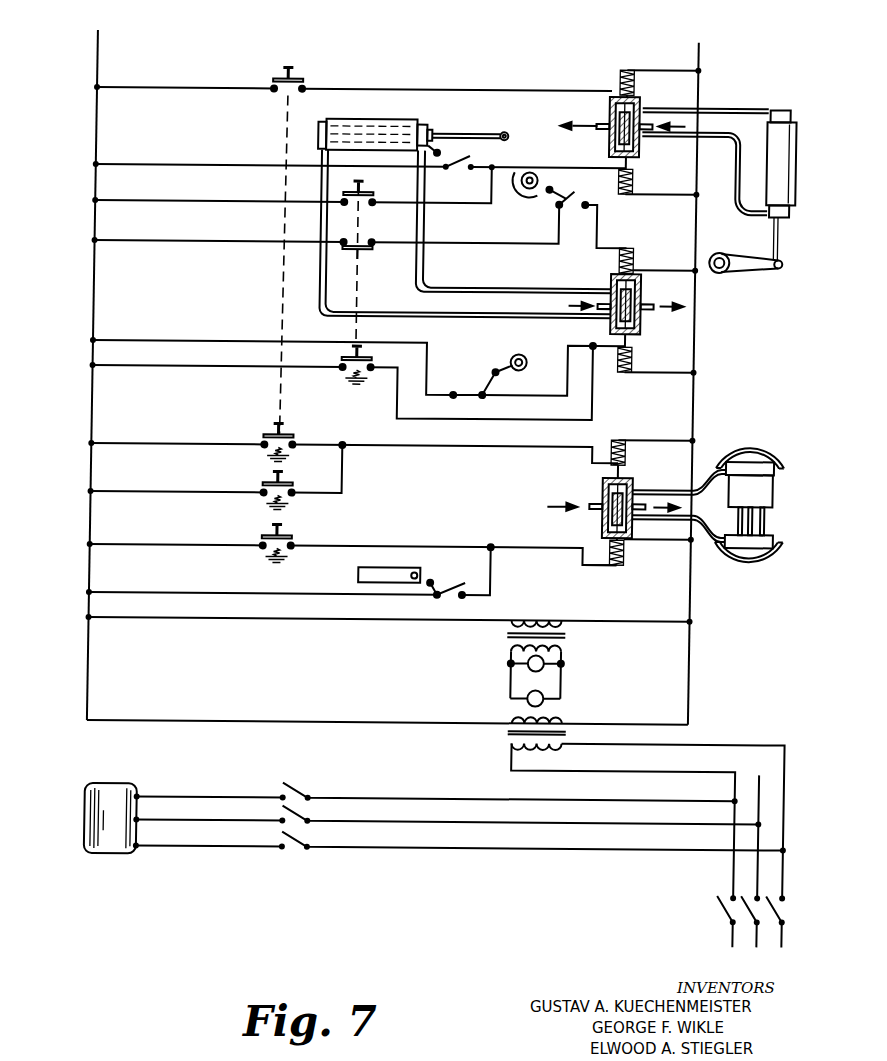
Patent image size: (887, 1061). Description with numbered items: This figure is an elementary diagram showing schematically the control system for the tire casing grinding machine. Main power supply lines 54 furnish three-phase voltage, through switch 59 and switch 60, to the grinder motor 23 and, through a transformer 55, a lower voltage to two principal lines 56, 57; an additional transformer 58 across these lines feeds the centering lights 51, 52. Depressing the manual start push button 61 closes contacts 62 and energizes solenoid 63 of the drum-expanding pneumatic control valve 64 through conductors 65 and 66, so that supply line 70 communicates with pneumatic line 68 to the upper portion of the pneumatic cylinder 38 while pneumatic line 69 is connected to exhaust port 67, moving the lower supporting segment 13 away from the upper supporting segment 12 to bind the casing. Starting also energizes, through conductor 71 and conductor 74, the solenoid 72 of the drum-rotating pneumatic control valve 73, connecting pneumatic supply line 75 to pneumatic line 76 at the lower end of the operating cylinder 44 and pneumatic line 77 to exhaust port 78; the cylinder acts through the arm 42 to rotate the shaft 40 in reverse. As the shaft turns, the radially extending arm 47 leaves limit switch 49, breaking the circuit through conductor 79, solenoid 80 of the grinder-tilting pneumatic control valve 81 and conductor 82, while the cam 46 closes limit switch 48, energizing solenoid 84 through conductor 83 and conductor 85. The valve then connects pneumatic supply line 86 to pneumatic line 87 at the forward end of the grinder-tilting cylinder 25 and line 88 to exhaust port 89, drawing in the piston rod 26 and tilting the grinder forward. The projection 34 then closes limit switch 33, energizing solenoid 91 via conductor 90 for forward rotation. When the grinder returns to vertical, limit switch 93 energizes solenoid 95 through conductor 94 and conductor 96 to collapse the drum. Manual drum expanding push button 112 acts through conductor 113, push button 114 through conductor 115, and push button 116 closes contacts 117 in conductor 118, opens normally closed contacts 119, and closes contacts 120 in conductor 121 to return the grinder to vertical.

The upper supporting segment 12 is at (762, 447).
The lower supporting segment 13 is at (767, 555).
The grinder motor 23 is at (126, 853).
The grinder-tilting cylinder 25 is at (350, 115).
The piston rod 26 is at (483, 127).
The limit switch 33 is at (470, 156).
The projection 34 is at (438, 146).
The pneumatic cylinder 38 is at (770, 490).
The shaft 40 is at (539, 170).
The arm 42 is at (761, 265).
The operating cylinder 44 is at (795, 112).
The cam 46 is at (515, 182).
The radially extending arm 47 is at (498, 366).
The limit switch 48 is at (574, 205).
The limit switch 49 is at (467, 389).
The centering light 51 is at (549, 658).
The centering light 52 is at (553, 697).
The main power supply lines 54 is at (743, 867).
The transformer 55 is at (524, 733).
The principal line 56 is at (95, 668).
The principal line 57 is at (698, 677).
The transformer 58 is at (549, 620).
The switch 59 is at (738, 905).
The switch 60 is at (308, 785).
The manual start push button 61 is at (287, 64).
The contacts 62 is at (298, 433).
The solenoid 63 is at (624, 434).
The drum-expanding pneumatic control valve 64 is at (614, 492).
The conductor 65 is at (492, 445).
The conductor 66 is at (655, 436).
The exhaust port 67 is at (650, 516).
The pneumatic line 68 is at (652, 488).
The pneumatic line 69 is at (680, 516).
The supply line 70 is at (604, 506).
The conductor 71 is at (197, 88).
The solenoid 72 is at (627, 64).
The drum-rotating pneumatic control valve 73 is at (623, 112).
The conductor 74 is at (660, 64).
The pneumatic supply line 75 is at (647, 118).
The pneumatic line 76 is at (723, 103).
The pneumatic line 77 is at (716, 152).
The exhaust port 78 is at (604, 126).
The conductor 79 is at (527, 391).
The solenoid 80 is at (634, 359).
The grinder-tilting pneumatic control valve 81 is at (645, 279).
The conductor 82 is at (660, 369).
The conductor 83 is at (600, 229).
The solenoid 84 is at (634, 244).
The conductor 85 is at (656, 266).
The pneumatic supply line 86 is at (627, 301).
The pneumatic line 87 is at (483, 286).
The line 88 is at (482, 304).
The exhaust port 89 is at (655, 306).
The conductor 90 is at (250, 164).
The solenoid 91 is at (636, 169).
The limit switch 93 is at (458, 584).
The conductor 94 is at (500, 571).
The solenoid 95 is at (662, 189).
The conductor 96 is at (664, 543).
The manual drum expanding push button 112 is at (268, 482).
The conductor 113 is at (349, 477).
The push button 114 is at (268, 535).
The conductor 115 is at (364, 541).
The push button 116 is at (324, 186).
The contacts 117 is at (376, 193).
The conductor 118 is at (435, 204).
The normally closed contacts 119 is at (365, 250).
The contacts 120 is at (346, 358).
The conductor 121 is at (463, 416).